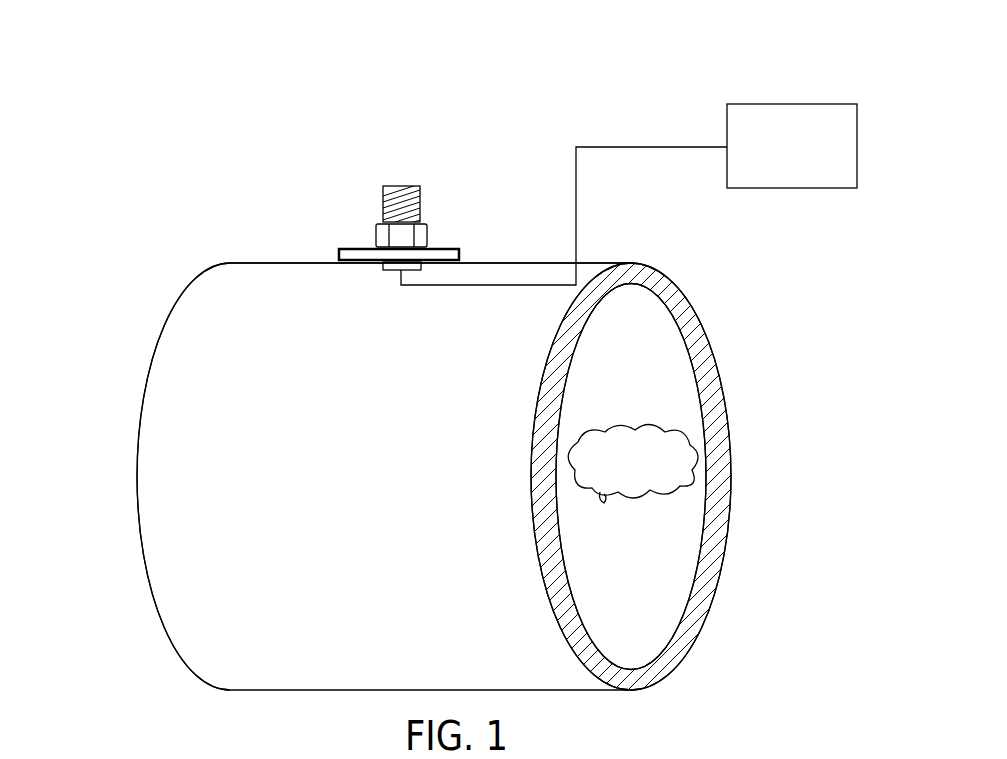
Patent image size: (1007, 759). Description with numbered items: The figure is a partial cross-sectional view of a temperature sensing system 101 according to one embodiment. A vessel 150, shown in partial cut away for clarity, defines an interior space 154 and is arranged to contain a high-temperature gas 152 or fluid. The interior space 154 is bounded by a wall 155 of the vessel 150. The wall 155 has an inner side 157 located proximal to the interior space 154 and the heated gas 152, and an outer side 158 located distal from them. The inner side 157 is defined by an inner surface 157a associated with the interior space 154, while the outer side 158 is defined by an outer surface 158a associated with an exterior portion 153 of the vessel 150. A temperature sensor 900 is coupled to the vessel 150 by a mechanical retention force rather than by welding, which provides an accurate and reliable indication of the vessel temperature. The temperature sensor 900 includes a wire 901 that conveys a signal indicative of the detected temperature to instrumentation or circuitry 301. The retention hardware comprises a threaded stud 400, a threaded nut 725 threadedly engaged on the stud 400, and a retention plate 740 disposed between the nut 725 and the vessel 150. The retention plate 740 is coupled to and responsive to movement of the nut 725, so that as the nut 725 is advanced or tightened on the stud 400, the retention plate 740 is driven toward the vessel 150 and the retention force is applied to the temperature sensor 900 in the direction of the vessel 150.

The temperature sensing system 101 is at (722, 55).
The vessel 150 is at (160, 650).
The high-temperature gas 152 is at (649, 472).
The exterior portion 153 is at (176, 470).
The interior space 154 is at (660, 568).
The wall 155 is at (700, 378).
The inner side 157 is at (657, 328).
The inner surface 157a is at (697, 487).
The outer side 158 is at (164, 353).
The outer surface 158a is at (250, 272).
The instrumentation or circuitry 301 is at (816, 159).
The stud 400 is at (425, 190).
The threaded nut 725 is at (428, 233).
The retention plate 740 is at (345, 248).
The temperature sensor 900 is at (390, 272).
The wire 901 is at (647, 145).